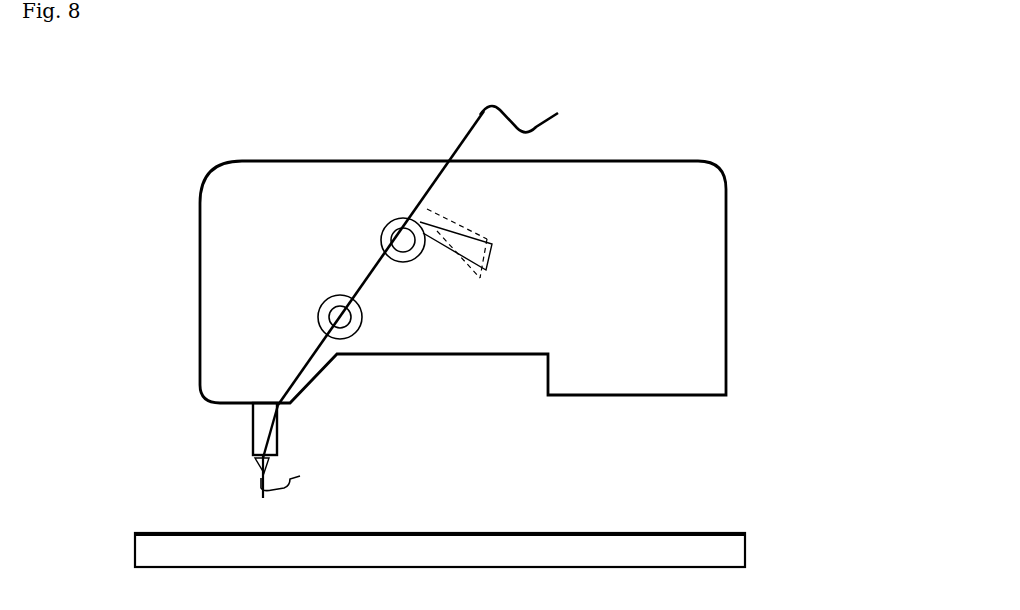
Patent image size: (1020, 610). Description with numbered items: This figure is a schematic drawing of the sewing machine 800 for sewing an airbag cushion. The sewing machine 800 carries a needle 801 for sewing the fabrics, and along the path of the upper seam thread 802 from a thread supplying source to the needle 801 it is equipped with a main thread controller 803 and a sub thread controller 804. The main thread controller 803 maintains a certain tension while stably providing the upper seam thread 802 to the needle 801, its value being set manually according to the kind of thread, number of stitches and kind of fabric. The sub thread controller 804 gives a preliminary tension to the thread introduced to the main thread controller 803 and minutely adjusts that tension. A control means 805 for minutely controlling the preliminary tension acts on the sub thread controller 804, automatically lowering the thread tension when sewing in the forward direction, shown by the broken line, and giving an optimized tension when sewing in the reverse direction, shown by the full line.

The sewing machine 800 is at (732, 295).
The needle 801 is at (252, 470).
The upper seam thread 802 is at (422, 180).
The main thread controller 803 is at (359, 335).
The sub thread controller 804 is at (410, 266).
The control means for minutely controlling the preliminary tension 805 is at (488, 230).